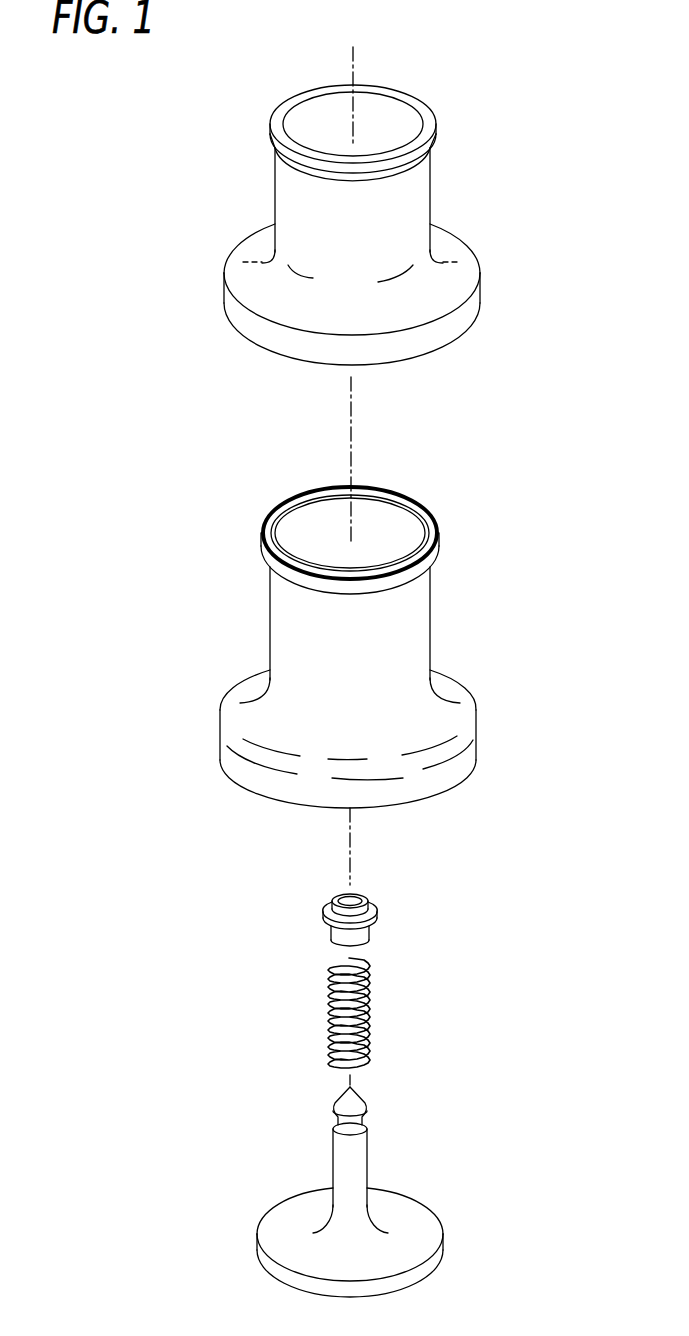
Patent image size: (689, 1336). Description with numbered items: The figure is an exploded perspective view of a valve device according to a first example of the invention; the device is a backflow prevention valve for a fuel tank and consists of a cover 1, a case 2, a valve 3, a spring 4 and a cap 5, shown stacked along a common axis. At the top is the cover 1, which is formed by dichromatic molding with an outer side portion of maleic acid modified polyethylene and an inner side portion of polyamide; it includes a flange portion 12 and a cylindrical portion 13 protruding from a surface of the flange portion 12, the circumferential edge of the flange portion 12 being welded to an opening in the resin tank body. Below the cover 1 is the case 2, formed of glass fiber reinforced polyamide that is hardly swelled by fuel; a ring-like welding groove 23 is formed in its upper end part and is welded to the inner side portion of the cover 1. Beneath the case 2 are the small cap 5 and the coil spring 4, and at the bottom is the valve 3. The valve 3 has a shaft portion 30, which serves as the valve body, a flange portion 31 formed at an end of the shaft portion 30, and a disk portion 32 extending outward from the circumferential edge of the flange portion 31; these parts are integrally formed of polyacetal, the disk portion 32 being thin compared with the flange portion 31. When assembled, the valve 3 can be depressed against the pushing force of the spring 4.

The cover 1 is at (361, 225).
The case 2 is at (348, 636).
The valve 3 is at (341, 1192).
The spring 4 is at (372, 1002).
The cap 5 is at (378, 912).
The flange portion 12 is at (250, 290).
The cylindrical portion 13 is at (275, 183).
The welding groove 23 is at (432, 513).
The shaft portion 30 is at (340, 1143).
The flange portion 31 is at (327, 1222).
The disk portion 32 is at (275, 1238).